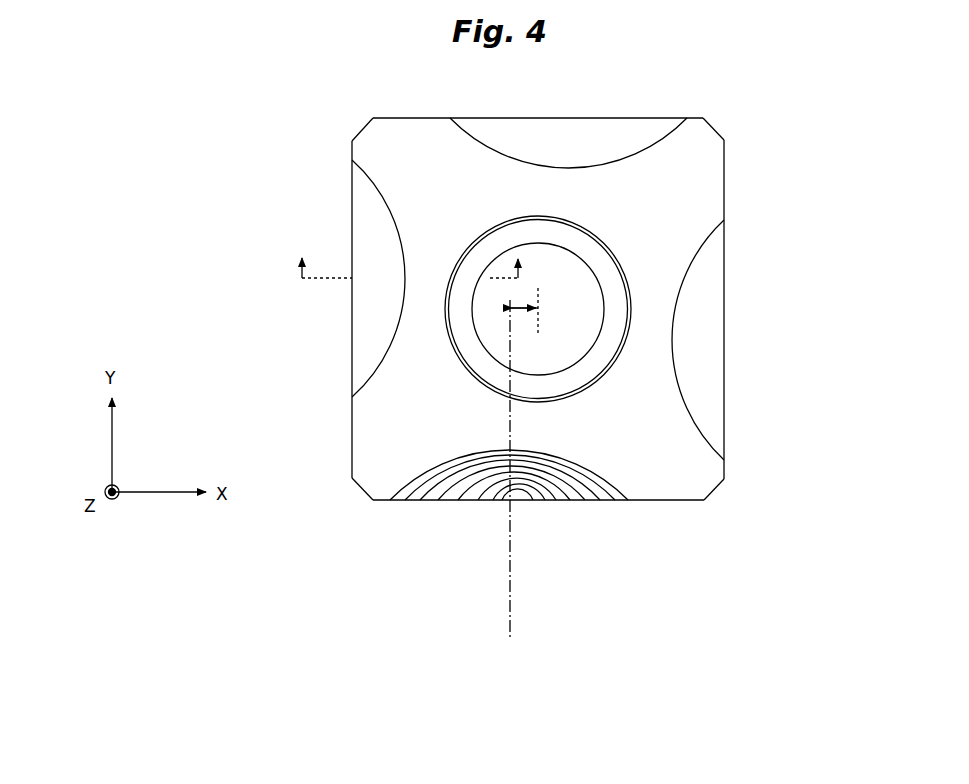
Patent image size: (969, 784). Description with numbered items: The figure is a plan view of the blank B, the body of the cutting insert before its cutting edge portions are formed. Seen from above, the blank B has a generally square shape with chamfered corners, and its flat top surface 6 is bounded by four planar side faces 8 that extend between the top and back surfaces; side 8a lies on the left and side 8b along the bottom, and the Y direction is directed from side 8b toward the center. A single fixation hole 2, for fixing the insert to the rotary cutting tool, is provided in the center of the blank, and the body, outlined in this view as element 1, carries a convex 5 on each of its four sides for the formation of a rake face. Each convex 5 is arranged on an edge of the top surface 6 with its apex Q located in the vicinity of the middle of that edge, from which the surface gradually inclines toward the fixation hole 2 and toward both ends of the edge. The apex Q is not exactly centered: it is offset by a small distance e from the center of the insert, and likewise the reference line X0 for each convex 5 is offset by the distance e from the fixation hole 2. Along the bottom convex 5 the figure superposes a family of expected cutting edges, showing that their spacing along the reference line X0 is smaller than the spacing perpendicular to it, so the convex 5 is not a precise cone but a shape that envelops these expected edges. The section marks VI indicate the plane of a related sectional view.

The tool body 1 is at (724, 180).
The fixation hole 2 is at (586, 289).
The convex 5 is at (517, 118).
The top surface 6 is at (708, 162).
The side face 8 is at (731, 208).
The side 8a is at (352, 424).
The side 8b is at (646, 505).
The blank B is at (741, 111).
The apex Q is at (352, 283).
The reference line X0 is at (516, 623).
The Y direction Y is at (540, 310).
The distance e is at (524, 321).
The section line VI is at (411, 267).